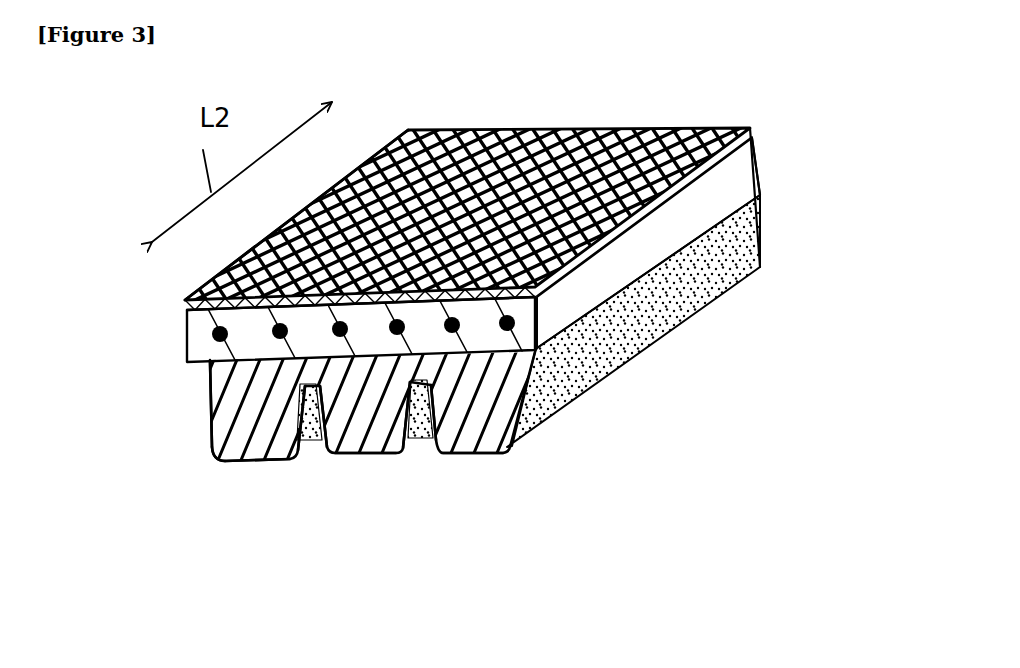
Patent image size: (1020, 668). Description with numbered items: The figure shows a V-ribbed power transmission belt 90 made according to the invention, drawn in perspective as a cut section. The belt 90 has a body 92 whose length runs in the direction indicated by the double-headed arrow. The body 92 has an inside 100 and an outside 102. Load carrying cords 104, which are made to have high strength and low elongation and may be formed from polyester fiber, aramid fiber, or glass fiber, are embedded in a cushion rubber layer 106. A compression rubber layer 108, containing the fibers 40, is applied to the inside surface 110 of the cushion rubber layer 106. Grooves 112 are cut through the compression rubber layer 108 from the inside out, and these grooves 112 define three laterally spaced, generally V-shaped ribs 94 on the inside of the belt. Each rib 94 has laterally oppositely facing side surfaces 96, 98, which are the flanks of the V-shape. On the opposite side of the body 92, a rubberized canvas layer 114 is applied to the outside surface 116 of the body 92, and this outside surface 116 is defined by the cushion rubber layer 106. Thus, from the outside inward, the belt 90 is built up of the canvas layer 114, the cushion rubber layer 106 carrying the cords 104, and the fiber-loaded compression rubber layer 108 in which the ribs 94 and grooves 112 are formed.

The fibers 40 is at (658, 322).
The V-ribbed power transmission belt 90 is at (763, 117).
The body 92 is at (757, 192).
The ribs 94 is at (252, 460).
The side surface 96 is at (315, 489).
The side surface 98 is at (311, 442).
The inside 100 is at (227, 464).
The outside 102 is at (378, 292).
The load carrying cords 104 is at (213, 356).
The cushion rubber layer 106 is at (200, 325).
The compression rubber layer 108 is at (503, 452).
The inside surface 110 is at (170, 443).
The grooves 112 is at (510, 283).
The rubberized canvas layer 114 is at (575, 178).
The outside surface 116 is at (314, 170).